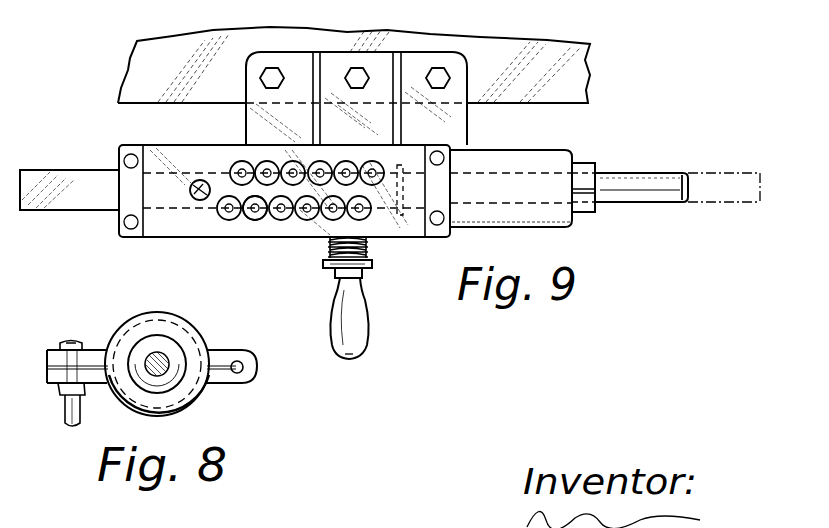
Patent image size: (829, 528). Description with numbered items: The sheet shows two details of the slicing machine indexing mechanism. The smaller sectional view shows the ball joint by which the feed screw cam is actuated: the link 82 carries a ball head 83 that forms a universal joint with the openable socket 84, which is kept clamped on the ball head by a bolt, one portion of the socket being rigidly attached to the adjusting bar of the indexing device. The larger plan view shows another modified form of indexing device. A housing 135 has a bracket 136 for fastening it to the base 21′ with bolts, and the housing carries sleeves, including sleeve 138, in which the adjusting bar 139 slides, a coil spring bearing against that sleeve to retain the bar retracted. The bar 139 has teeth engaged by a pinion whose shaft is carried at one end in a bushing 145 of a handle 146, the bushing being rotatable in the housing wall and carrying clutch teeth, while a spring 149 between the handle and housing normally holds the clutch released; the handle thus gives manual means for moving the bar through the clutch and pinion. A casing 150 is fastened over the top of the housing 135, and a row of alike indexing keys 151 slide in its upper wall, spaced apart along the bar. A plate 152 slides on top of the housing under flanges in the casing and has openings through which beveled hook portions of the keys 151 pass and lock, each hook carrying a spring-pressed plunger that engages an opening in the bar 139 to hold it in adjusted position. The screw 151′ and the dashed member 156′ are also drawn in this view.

In FIG. 9, the base 21′ is at (577, 80).
In FIG. 9, the bracket 136 is at (247, 119).
In FIG. 9, the casing 150 is at (175, 228).
In FIG. 9, the indexing keys 151 is at (223, 214).
In FIG. 9, the plate 152 is at (252, 214).
In FIG. 9, the screw 151′ is at (237, 167).
In FIG. 9, the contact bar 156′ is at (382, 167).
In FIG. 9, the housing 135 is at (510, 149).
In FIG. 9, the sleeve 138 is at (584, 163).
In FIG. 9, the adjusting bar 139 is at (664, 173).
In FIG. 9, the bushing 145 is at (367, 243).
In FIG. 9, the spring 149 is at (373, 263).
In FIG. 9, the handle 146 is at (367, 279).
In FIG. 8, the openable socket 84 is at (163, 312).
In FIG. 8, the ball head 83 is at (140, 351).
In FIG. 8, the link 82 is at (166, 360).